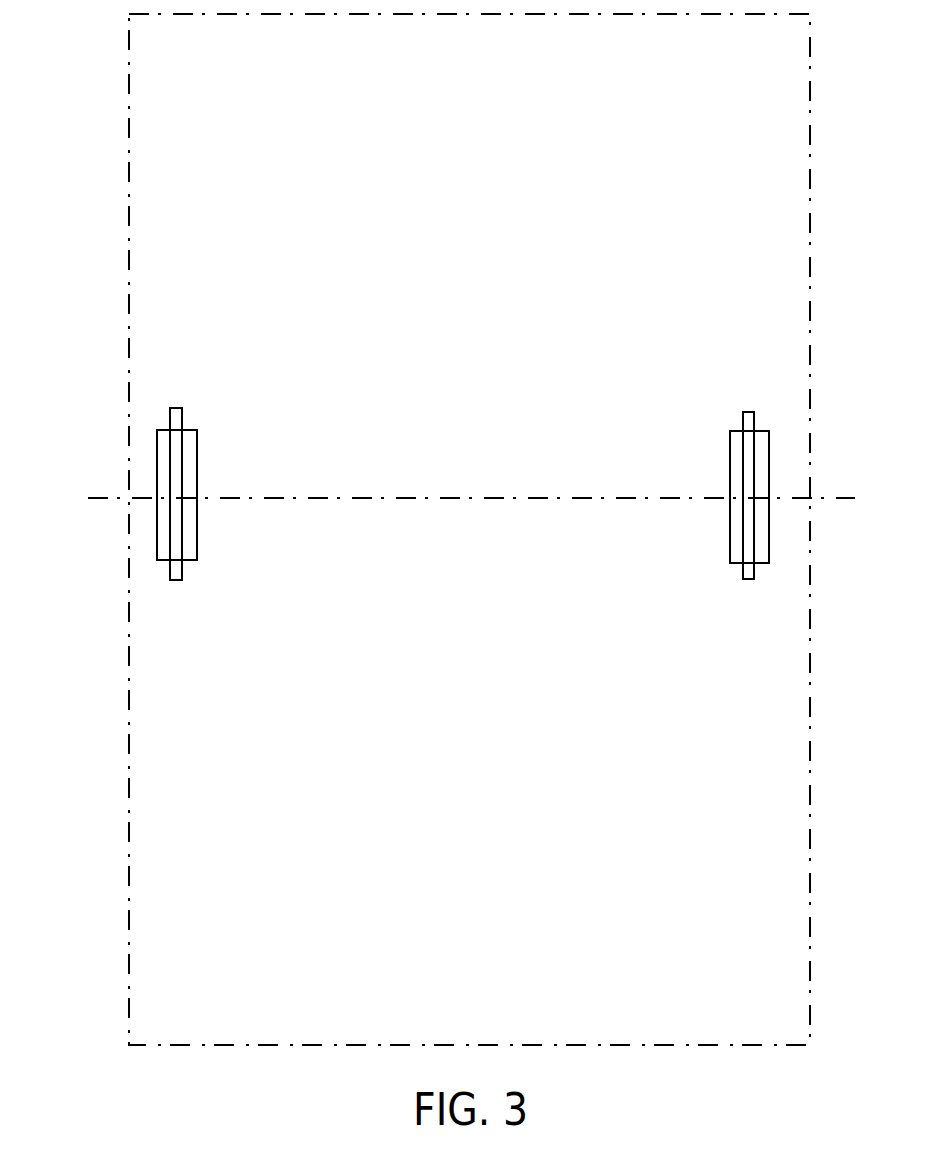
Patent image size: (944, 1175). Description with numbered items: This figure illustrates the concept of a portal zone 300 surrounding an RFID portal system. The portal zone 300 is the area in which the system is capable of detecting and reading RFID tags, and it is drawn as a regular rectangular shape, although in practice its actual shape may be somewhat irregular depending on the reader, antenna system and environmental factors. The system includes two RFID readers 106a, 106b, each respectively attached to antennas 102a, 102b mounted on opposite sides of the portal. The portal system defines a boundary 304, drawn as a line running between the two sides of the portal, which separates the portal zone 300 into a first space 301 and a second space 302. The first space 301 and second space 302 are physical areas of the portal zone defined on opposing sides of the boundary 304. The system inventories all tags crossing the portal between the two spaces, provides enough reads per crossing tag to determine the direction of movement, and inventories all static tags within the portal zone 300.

The portal zone 300 is at (128, 828).
The first space 301 is at (462, 787).
The second space 302 is at (455, 265).
The boundary 304 is at (87, 498).
The antenna 102a is at (172, 568).
The antenna 102b is at (747, 568).
The RFID reader 106a is at (157, 430).
The RFID reader 106b is at (787, 415).